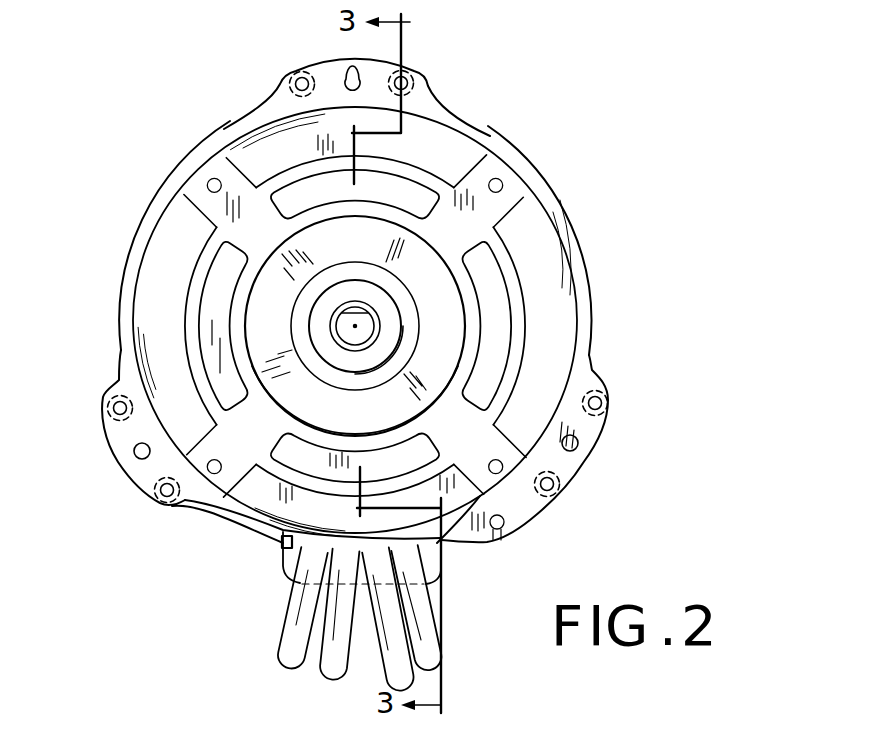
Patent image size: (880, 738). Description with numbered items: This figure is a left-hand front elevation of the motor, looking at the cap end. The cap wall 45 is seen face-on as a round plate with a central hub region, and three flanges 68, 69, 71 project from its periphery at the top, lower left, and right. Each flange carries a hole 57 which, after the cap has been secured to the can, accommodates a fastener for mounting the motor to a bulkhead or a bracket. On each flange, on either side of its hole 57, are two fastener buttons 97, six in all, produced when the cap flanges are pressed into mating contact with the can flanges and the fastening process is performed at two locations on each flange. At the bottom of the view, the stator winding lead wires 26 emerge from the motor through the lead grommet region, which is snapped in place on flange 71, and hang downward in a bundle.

The lead wires 26 is at (345, 632).
The wall of cap 45 is at (490, 198).
The holes in cap flanges 57 is at (350, 64).
The flange of cap 68 is at (594, 368).
The flange of cap 69 is at (117, 382).
The flange 71 is at (424, 88).
The fastener buttons 97 is at (292, 80).